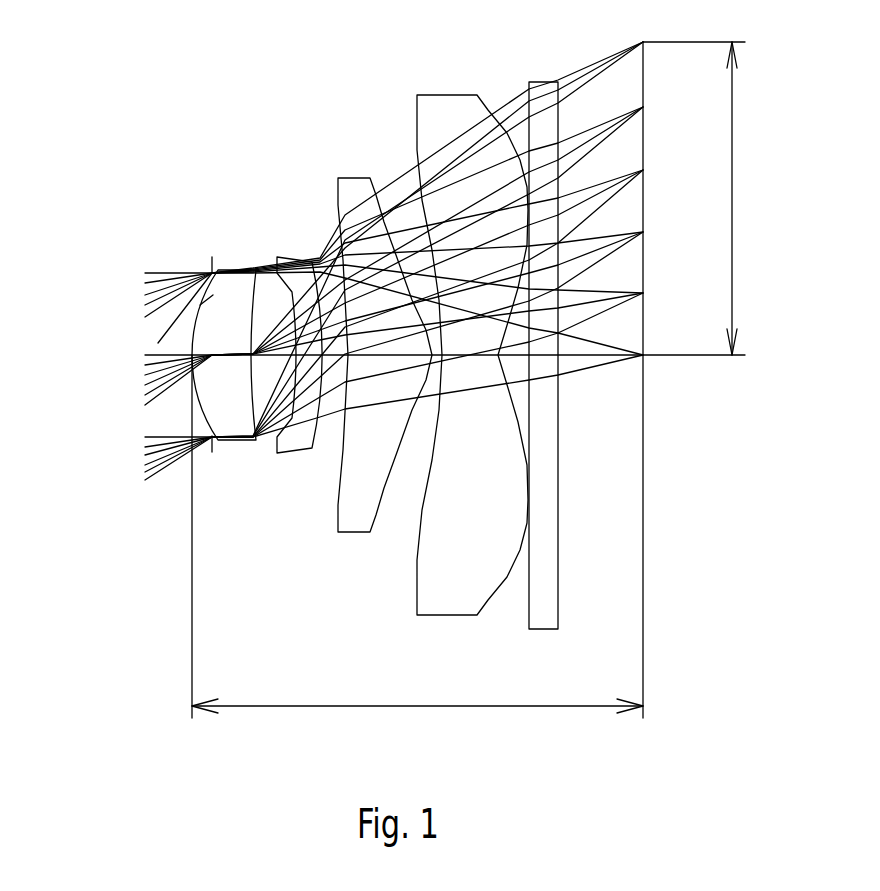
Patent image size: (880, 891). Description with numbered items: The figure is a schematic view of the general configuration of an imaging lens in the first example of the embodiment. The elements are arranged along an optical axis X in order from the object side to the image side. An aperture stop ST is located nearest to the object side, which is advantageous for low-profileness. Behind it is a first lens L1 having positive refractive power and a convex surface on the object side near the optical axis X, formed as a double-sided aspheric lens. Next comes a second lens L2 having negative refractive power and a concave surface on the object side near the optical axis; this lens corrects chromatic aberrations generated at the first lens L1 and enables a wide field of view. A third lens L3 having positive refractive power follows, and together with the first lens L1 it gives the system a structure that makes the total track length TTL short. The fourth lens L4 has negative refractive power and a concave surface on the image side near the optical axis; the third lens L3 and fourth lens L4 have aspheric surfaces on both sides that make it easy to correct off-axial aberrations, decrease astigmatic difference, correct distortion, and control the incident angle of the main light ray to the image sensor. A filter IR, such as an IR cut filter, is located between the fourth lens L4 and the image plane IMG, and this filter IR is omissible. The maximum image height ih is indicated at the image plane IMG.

The optical axis X is at (157, 354).
The aperture stop ST is at (210, 266).
The first lens L1 is at (242, 267).
The second lens L2 is at (292, 255).
The third lens L3 is at (345, 178).
The fourth lens L4 is at (432, 95).
The filter IR is at (541, 82).
The image plane IMG is at (643, 595).
The total track length TTL is at (417, 536).
The maximum image height ih is at (694, 198).